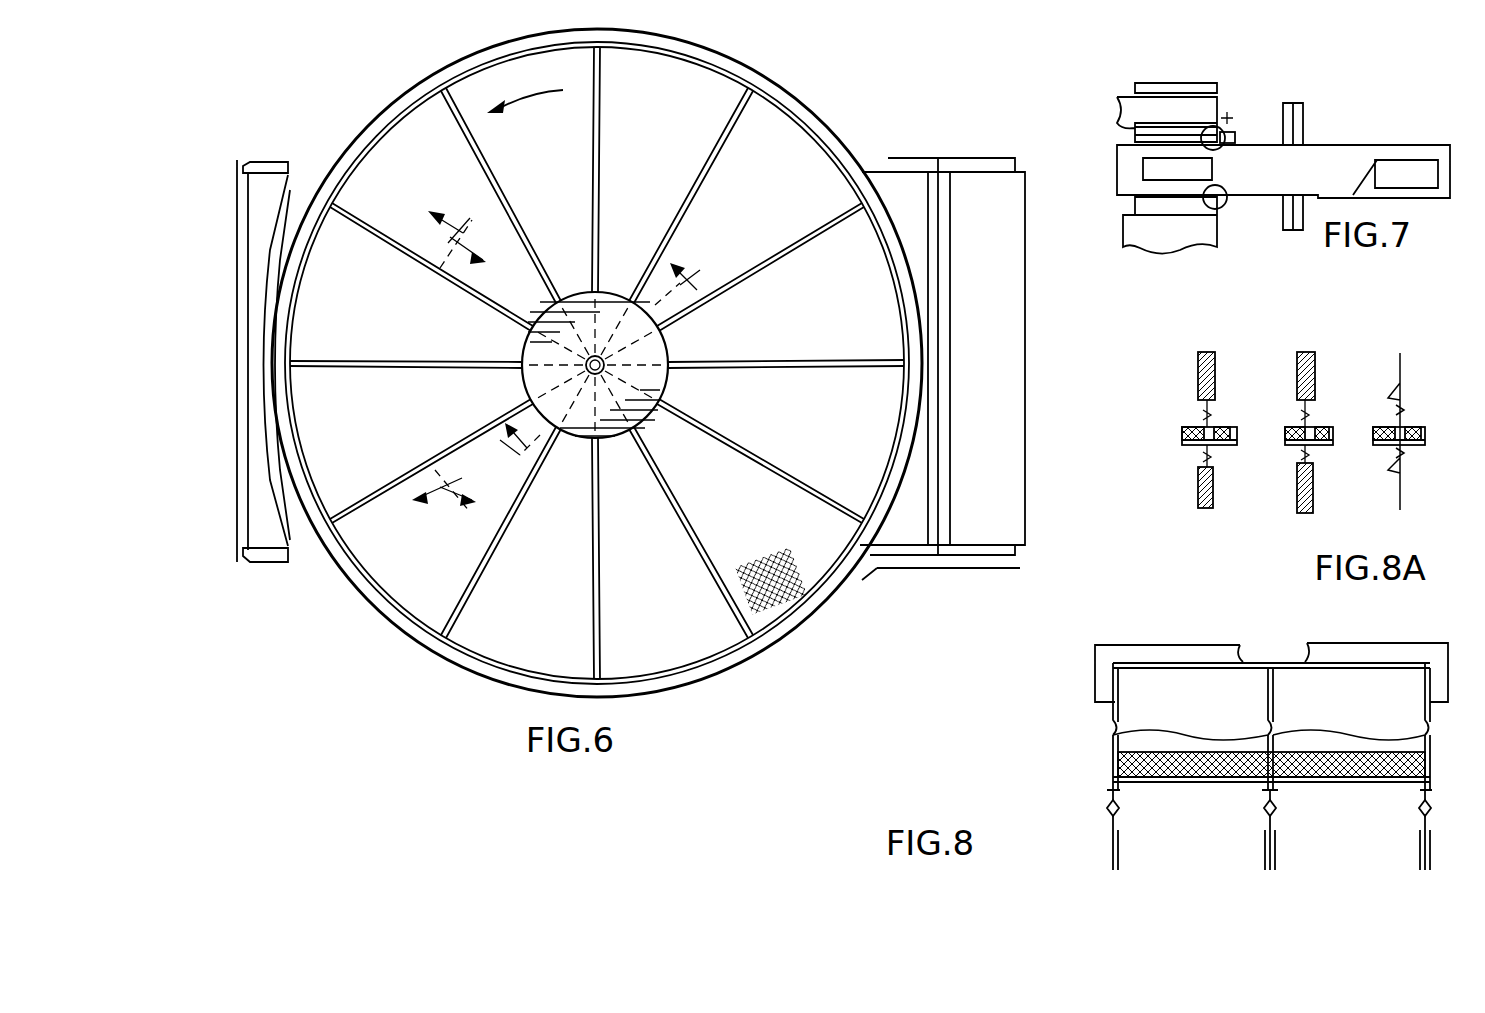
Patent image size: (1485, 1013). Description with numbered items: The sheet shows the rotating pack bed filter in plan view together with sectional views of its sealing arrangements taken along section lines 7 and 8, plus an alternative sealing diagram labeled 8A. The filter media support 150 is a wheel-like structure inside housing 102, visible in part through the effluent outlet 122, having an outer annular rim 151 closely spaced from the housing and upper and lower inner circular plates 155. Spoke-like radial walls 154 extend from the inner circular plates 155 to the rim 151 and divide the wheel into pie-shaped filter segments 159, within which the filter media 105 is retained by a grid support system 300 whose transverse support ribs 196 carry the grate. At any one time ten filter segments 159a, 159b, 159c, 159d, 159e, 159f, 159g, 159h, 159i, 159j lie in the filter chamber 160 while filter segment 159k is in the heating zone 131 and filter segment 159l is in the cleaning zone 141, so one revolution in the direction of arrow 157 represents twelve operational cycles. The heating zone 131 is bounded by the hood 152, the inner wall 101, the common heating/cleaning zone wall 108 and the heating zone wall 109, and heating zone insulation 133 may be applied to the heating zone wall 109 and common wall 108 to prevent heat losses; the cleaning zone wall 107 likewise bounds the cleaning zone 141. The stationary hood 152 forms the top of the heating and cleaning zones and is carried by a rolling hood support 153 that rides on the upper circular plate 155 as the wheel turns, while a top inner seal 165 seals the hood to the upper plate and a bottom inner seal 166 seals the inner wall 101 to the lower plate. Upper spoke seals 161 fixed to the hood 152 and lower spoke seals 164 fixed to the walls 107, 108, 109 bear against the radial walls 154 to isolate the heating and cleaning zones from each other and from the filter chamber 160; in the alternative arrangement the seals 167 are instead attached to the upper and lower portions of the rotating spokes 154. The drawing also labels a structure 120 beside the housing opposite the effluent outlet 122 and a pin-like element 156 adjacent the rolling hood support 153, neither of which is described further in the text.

In FIG. 7, the inner wall 101 is at (1217, 241).
In FIG. 8A, the inner wall 101 is at (1358, 370).
In FIG. 6, the housing 102 is at (393, 103).
In FIG. 6, the filter media 105 is at (788, 578).
In FIG. 8A, the filter media 105 is at (1215, 428).
In FIG. 8, the filter media 105 is at (1188, 755).
In FIG. 7, the cleaning zone wall 107 is at (1157, 223).
In FIG. 8A, the cleaning zone wall 107 is at (1398, 497).
In FIG. 8, the cleaning zone wall 107 is at (1108, 840).
In FIG. 8A, the common heating/cleaning zone wall 108 is at (1313, 500).
In FIG. 8, the common heating/cleaning zone wall 108 is at (1268, 848).
In FIG. 8A, the heating zone wall 109 is at (1200, 500).
In FIG. 8, the heating zone wall 109 is at (1425, 855).
In FIG. 6, the housing section 120 is at (1027, 357).
In FIG. 8A, the housing section 120 is at (1115, 339).
In FIG. 6, the effluent outlet 122 is at (236, 374).
In FIG. 6, the heating zone 131 is at (308, 334).
In FIG. 8A, the heating zone 131 is at (1231, 494).
In FIG. 8, the heating zone 131 is at (1321, 872).
In FIG. 8A, the heating zone insulation 133 is at (1222, 352).
In FIG. 6, the cleaning zone 141 is at (315, 444).
In FIG. 8A, the cleaning zone 141 is at (1330, 494).
In FIG. 8, the cleaning zone 141 is at (1158, 872).
In FIG. 6, the filter media support 150 is at (470, 666).
In FIG. 8A, the filter media support 150 is at (1430, 452).
In FIG. 6, the rim 151 is at (675, 70).
In FIG. 7, the hood 152 is at (1147, 110).
In FIG. 8, the hood 152 is at (1180, 668).
In FIG. 7, the rolling hood support 153 is at (1237, 133).
In FIG. 6, the radial walls 154 is at (603, 188).
In FIG. 8A, the radial walls 154 is at (1300, 425).
In FIG. 8, the radial walls 154 is at (1112, 768).
In FIG. 6, the inner circular plates 155 is at (664, 383).
In FIG. 7, the inner circular plates 155 is at (1350, 148).
In FIG. 7, the pin 156 is at (1307, 127).
In FIG. 6, the arrow 157 is at (542, 97).
In FIG. 8A, the arrow 157 is at (1365, 341).
In FIG. 8, the arrow 157 is at (1310, 686).
In FIG. 8A, the filter segments 159 is at (1235, 451).
In FIG. 6, the filter segment 159a is at (410, 570).
In FIG. 6, the filter segment 159b is at (520, 590).
In FIG. 6, the filter segment 159c is at (623, 608).
In FIG. 6, the filter segment 159d is at (731, 543).
In FIG. 6, the filter segment 159e is at (816, 451).
In FIG. 6, the filter segment 159f is at (818, 338).
In FIG. 6, the filter segment 159g is at (713, 221).
In FIG. 6, the filter segment 159h is at (606, 238).
In FIG. 6, the filter segment 159i is at (530, 238).
In FIG. 6, the filter segment 159j is at (492, 300).
In FIG. 6, the filter segment 159k is at (460, 354).
In FIG. 6, the filter segment 159l is at (427, 419).
In FIG. 8A, the filter chamber 160 is at (1153, 494).
In FIG. 8, the filter chamber 160 is at (1053, 872).
In FIG. 8, the upper spoke seals 161 is at (1118, 735).
In FIG. 8, the lower spoke seals 164 is at (1258, 797).
In FIG. 7, the top inner seal 165 is at (1217, 123).
In FIG. 7, the bottom inner seal 166 is at (1220, 207).
In FIG. 8A, the seals 167 is at (1198, 455).
In FIG. 8, the support ribs 196 is at (1110, 785).
In FIG. 8, the grid support system 300 is at (1122, 760).
In FIG. 6, the section lines 7— 7 is at (608, 369).
In FIG. 6, the section lines 8— 8 is at (435, 349).
In FIG. 6, the section line 8A is at (491, 375).